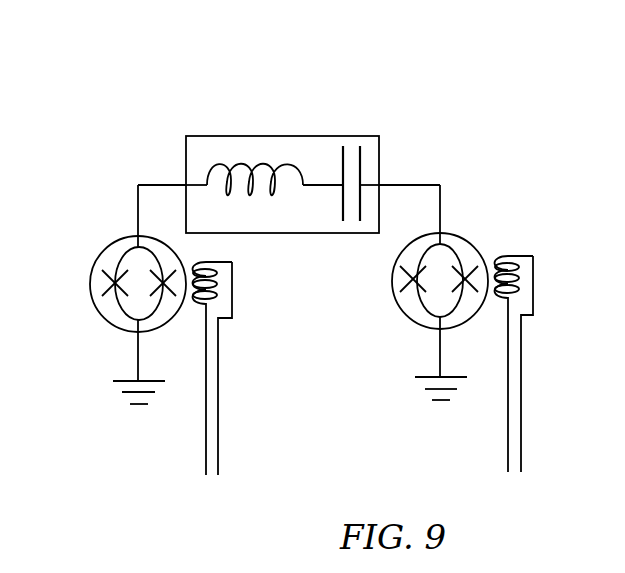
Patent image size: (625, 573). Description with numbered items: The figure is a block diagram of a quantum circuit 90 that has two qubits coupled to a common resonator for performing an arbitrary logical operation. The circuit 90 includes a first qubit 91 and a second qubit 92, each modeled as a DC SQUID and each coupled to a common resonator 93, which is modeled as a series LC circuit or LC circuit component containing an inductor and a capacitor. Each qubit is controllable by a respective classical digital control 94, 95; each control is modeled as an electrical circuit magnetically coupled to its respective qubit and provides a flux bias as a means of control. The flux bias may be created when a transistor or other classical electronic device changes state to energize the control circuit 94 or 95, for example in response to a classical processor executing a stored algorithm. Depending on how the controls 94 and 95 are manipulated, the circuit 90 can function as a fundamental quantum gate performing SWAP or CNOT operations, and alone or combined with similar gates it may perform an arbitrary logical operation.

The quantum circuit 90 is at (328, 37).
The qubit 91 is at (95, 257).
The qubit 92 is at (462, 232).
The common resonator 93 is at (230, 136).
The classical digital control 94 is at (210, 484).
The classical digital control 95 is at (517, 481).